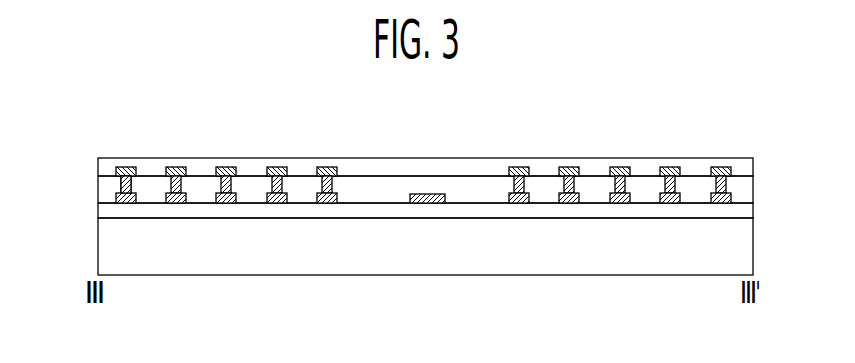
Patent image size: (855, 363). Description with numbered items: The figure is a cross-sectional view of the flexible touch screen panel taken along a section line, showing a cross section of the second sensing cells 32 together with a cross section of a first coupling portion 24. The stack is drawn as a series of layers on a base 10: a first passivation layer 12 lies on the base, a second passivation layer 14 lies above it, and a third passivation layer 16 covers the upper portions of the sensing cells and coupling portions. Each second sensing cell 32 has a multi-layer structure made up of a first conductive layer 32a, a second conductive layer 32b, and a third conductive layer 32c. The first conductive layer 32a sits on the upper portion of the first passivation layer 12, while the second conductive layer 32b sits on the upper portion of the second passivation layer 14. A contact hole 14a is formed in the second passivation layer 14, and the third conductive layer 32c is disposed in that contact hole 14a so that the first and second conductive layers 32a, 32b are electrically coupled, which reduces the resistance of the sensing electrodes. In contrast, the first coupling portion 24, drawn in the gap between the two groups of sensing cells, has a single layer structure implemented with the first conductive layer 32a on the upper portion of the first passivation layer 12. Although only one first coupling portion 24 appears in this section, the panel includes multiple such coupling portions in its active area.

The substrate 10 is at (747, 251).
The first passivation layer 12 is at (747, 213).
The second passivation layer 14 is at (747, 193).
The contact hole 14a is at (132, 187).
The third passivation layer 16 is at (747, 168).
The first coupling portion 24 is at (420, 203).
The second sensing cell 32 is at (43, 160).
The first conductive layer 32a is at (116, 198).
The second conductive layer 32b is at (116, 171).
The third conductive layer 32c is at (121, 190).